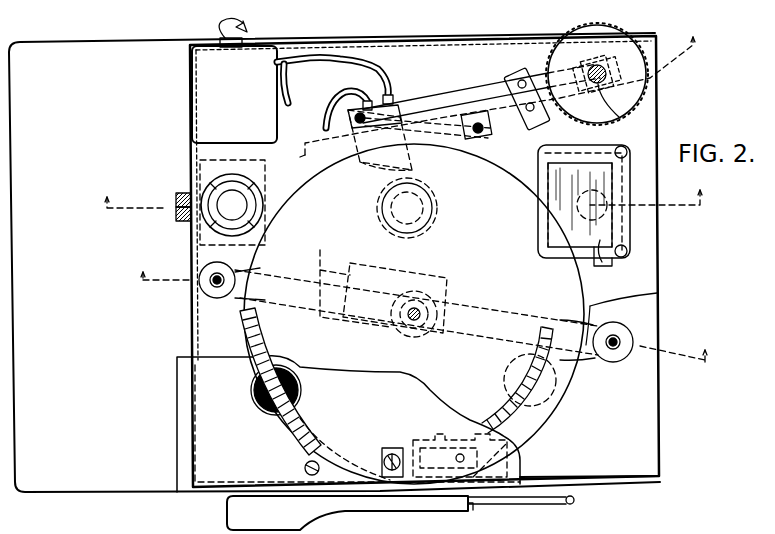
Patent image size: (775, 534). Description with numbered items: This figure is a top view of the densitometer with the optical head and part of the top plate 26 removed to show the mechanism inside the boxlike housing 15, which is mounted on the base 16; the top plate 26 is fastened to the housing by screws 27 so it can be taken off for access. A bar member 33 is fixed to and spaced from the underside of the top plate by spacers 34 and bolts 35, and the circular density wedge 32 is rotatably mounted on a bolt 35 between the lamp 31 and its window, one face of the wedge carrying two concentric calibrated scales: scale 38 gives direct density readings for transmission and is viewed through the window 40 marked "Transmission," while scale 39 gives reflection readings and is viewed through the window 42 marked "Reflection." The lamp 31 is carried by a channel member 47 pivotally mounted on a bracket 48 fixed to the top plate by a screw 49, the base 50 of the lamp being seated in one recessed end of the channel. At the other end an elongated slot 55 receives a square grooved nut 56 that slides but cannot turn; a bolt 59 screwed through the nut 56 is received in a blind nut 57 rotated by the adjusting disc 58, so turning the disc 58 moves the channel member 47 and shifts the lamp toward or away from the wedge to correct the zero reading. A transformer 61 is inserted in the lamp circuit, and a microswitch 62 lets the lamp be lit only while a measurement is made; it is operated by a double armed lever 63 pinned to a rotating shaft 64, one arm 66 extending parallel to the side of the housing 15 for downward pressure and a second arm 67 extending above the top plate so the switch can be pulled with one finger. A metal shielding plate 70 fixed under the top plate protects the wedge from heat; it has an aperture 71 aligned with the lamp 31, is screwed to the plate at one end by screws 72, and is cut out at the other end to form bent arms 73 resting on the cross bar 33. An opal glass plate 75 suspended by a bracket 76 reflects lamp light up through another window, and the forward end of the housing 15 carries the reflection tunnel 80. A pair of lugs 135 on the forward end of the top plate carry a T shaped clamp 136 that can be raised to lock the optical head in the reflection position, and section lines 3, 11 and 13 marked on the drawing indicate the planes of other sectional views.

The section line 3- 3 is at (396, 211).
The section line 11- 11 is at (495, 81).
The section line 13- 13 is at (424, 328).
The housing 15 is at (659, 326).
The base 16 is at (95, 494).
The top plate 26 is at (177, 407).
The screws 27 is at (304, 470).
The lamp 31 is at (382, 222).
The circular density wedge 32 is at (639, 314).
The bar member 33 is at (510, 305).
The spacers 34 is at (205, 292).
The bolts 35 is at (616, 356).
The scale 38 is at (545, 402).
The scale 39 is at (297, 440).
The window 40 is at (550, 398).
The window 42 is at (258, 407).
The channel member 47 is at (490, 130).
The bracket 48 is at (508, 82).
The screw 49 is at (519, 80).
The base of the lamp 50 is at (400, 115).
The elongated slot 55 is at (570, 40).
The square grooved nut 56 is at (610, 70).
The blind nut member 57 is at (620, 60).
The adjusting disc 58 is at (630, 98).
The bolt 59 is at (623, 110).
The transformer 61 is at (292, 80).
The microswitch 62 is at (448, 438).
The double armed lever 63 is at (473, 510).
The rotating shaft 64 is at (465, 507).
The arm 66 is at (227, 512).
The second arm 67 is at (574, 502).
The metal shielding plate 70 is at (478, 250).
The aperture 71 is at (435, 208).
The screws 72 is at (488, 136).
The bent arms 73 is at (325, 312).
The opal glass plate 75 is at (606, 262).
The bracket 76 is at (628, 252).
The reflection tunnel 80 is at (200, 178).
The lugs 135 is at (176, 220).
The T shaped clamp 136 is at (176, 200).